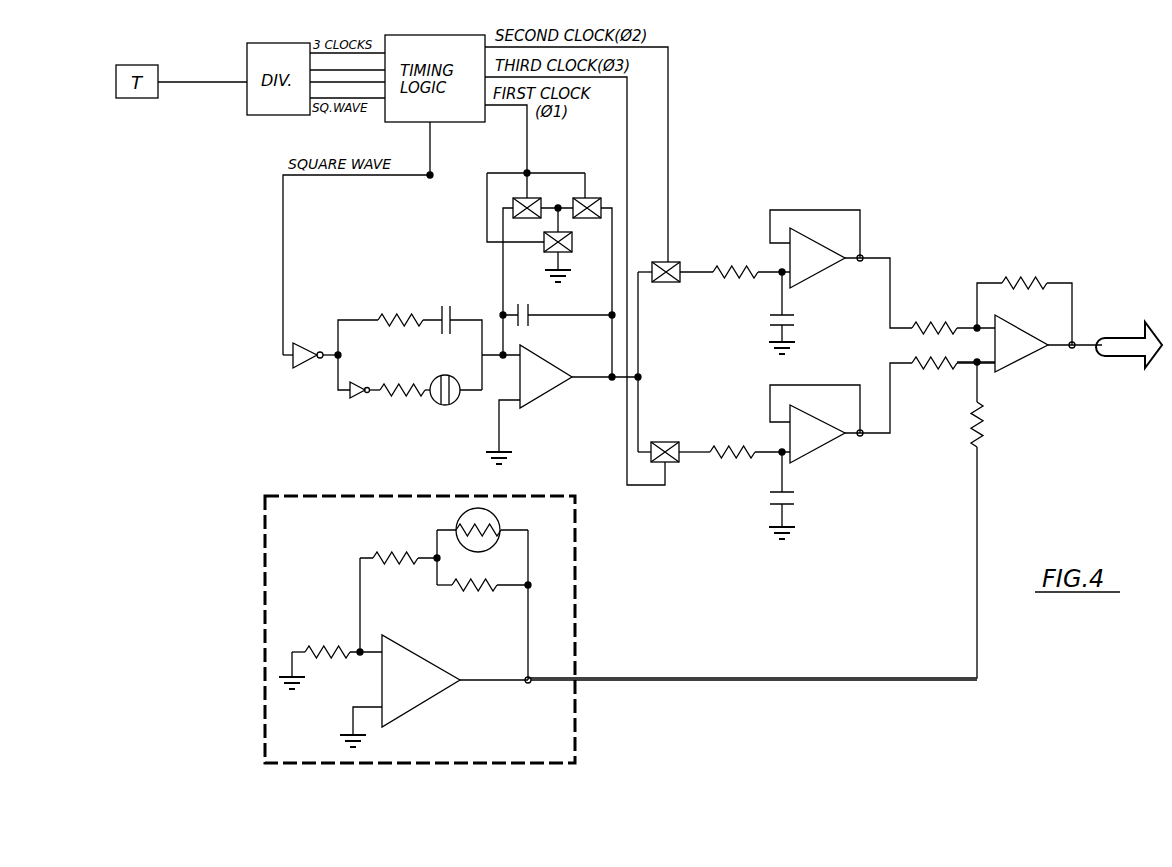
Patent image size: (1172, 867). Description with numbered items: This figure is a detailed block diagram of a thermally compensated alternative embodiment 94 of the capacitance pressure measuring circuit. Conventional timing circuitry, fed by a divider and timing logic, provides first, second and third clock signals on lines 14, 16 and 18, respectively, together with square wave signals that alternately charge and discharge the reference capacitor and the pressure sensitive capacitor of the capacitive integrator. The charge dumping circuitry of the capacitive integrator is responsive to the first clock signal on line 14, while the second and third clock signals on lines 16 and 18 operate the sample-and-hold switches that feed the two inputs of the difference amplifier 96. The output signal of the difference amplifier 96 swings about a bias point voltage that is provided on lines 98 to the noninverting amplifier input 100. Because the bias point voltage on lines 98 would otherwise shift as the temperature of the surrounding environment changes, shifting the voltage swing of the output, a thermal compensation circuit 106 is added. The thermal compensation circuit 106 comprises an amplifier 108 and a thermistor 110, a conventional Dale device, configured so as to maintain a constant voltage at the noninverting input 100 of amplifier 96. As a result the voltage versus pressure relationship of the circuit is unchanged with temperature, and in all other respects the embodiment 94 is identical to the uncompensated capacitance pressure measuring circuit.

The first clock signal line 14 is at (527, 157).
The second clock signal line 16 is at (668, 160).
The third clock signal line 18 is at (627, 158).
The alternative embodiment 94 is at (863, 140).
The amplifier 96 is at (1025, 350).
The bias point voltage lines 98 is at (975, 552).
The noninverting amplifier input 100 is at (980, 365).
The thermal compensation circuit 106 is at (580, 629).
The amplifier 108 is at (430, 672).
The thermistor 110 is at (455, 520).